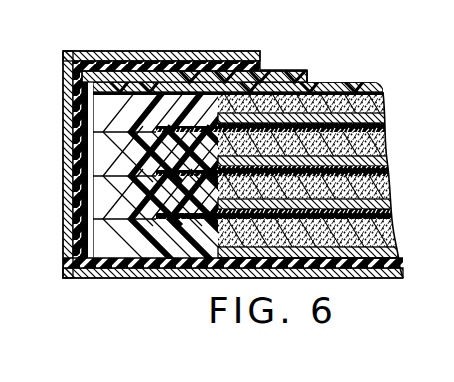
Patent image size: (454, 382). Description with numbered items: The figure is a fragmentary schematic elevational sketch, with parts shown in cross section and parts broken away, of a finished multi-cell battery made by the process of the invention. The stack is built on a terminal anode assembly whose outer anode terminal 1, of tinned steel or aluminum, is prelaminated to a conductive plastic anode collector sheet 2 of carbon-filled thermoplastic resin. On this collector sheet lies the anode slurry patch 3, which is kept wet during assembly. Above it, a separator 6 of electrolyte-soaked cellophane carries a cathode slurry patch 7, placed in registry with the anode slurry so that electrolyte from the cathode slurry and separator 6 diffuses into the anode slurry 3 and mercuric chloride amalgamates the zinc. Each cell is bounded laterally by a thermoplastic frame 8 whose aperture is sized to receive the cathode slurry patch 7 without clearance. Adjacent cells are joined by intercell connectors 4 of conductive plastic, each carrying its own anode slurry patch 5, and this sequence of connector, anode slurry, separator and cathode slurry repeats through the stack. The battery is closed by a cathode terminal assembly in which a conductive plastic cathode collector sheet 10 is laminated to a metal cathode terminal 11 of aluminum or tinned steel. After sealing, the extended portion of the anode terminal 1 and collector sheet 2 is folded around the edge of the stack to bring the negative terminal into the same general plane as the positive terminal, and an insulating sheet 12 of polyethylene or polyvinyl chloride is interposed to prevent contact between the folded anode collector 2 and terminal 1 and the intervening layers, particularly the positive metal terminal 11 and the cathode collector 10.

The outer anode terminal 1 is at (113, 270).
The conductive plastic anode collector sheet 2 is at (180, 265).
The anode slurry patch 3 is at (393, 260).
The intercell connector 4 is at (383, 131).
The anode slurry patch 5 is at (384, 129).
The separator 6 is at (381, 118).
The cathode slurry patch 7 is at (385, 103).
The frame 8 is at (118, 116).
The cathode collector sheet 10 is at (380, 92).
The metal cathode terminal 11 is at (355, 85).
The insulating sheet 12 is at (277, 73).